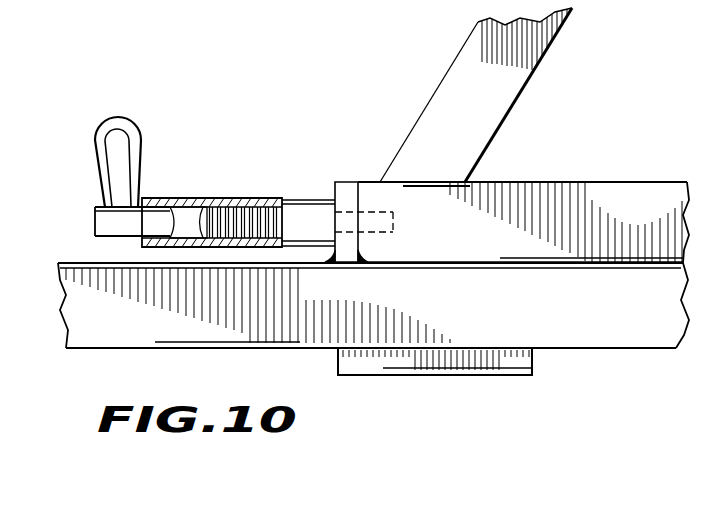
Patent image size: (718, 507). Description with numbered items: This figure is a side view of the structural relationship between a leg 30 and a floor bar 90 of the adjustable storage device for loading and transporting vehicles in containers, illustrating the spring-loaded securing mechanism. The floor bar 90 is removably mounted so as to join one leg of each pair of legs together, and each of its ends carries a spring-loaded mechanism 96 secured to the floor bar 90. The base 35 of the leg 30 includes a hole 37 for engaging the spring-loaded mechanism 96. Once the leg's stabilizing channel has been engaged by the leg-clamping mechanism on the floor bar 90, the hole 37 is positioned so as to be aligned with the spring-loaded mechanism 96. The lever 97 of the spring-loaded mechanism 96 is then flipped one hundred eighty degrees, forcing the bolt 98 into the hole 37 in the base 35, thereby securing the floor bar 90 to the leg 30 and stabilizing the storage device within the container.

The leg 30 is at (468, 135).
The base 35 is at (583, 182).
The hole 37 is at (345, 192).
The floor bar 90 is at (585, 325).
The spring-loaded mechanism 96 is at (95, 215).
The lever 97 is at (142, 147).
The bolt 98 is at (297, 208).